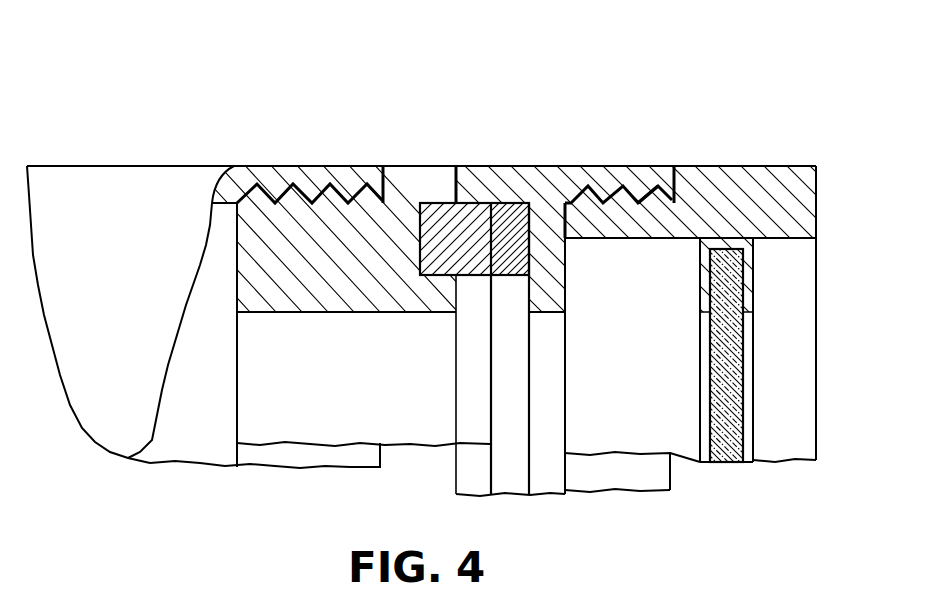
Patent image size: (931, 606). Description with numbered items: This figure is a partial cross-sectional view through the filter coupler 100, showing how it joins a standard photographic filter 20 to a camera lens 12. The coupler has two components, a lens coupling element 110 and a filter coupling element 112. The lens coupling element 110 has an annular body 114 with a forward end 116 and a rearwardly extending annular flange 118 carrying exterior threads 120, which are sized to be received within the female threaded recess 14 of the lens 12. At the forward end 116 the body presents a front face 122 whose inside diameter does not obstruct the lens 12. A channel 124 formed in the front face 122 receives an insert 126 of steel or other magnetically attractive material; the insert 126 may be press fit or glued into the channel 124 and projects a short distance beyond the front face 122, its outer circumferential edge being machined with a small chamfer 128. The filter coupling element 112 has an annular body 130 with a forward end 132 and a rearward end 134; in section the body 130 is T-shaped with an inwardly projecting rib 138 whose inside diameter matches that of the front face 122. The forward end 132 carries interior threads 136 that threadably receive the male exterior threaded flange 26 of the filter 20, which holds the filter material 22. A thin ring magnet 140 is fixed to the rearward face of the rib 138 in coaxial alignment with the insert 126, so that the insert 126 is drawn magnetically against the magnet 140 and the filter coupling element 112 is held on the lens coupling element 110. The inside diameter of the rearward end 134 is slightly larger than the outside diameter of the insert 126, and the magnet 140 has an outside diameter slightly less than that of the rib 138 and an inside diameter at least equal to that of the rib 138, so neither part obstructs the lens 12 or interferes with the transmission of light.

The filter coupler 100 is at (505, 86).
The lens 12 is at (87, 167).
The threaded recess 14 is at (283, 166).
The filter 20 is at (782, 153).
The filter material 22 is at (725, 462).
The exterior threaded flange 26 is at (648, 200).
The lens coupling element 110 is at (421, 165).
The filter coupling element 112 is at (572, 167).
The annular body 114 is at (328, 216).
The forward end 116 is at (455, 197).
The rearwardly extending annular flange 118 is at (265, 256).
The exterior threads 120 is at (236, 208).
The front face 122 is at (458, 381).
The channel 124 is at (440, 270).
The insert 126 is at (438, 267).
The chamfer 128 is at (481, 228).
The annular body 130 is at (610, 166).
The forward end 132 is at (697, 166).
The rearward end 134 is at (453, 203).
The interior threads 136 is at (610, 200).
The inwardly projecting rib 138 is at (560, 303).
The magnet 140 is at (504, 268).